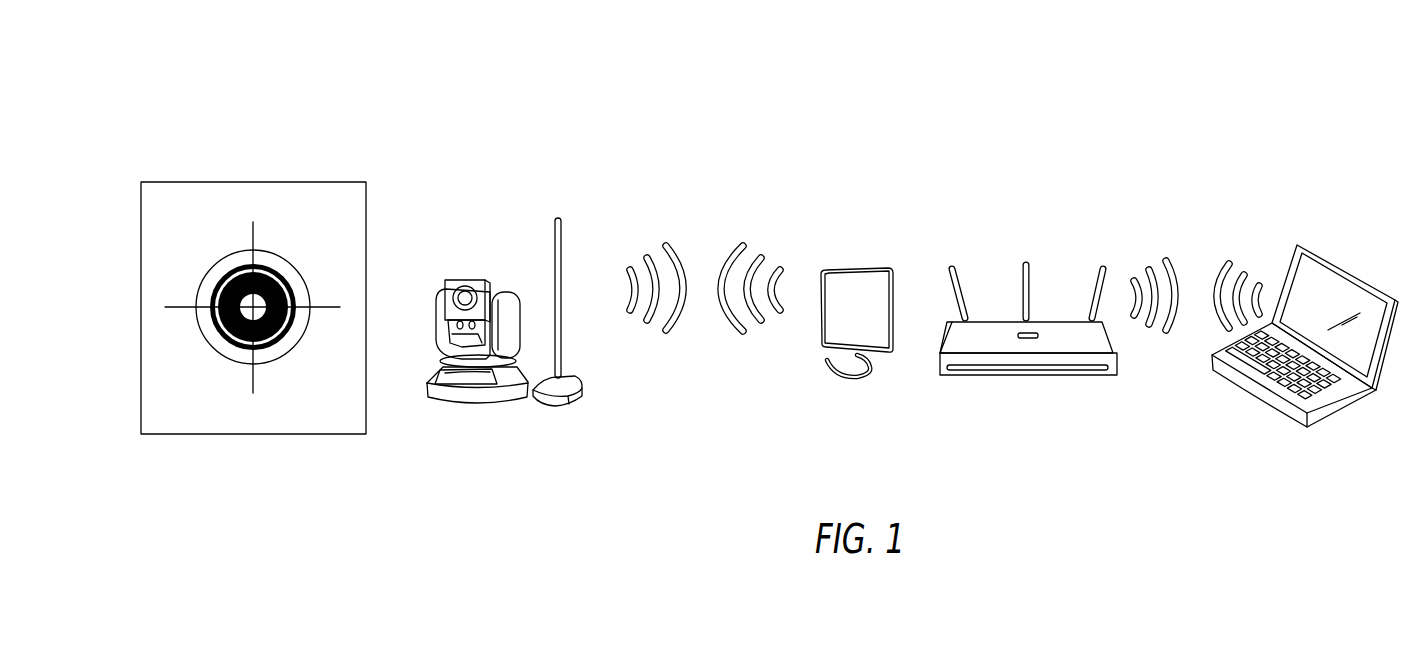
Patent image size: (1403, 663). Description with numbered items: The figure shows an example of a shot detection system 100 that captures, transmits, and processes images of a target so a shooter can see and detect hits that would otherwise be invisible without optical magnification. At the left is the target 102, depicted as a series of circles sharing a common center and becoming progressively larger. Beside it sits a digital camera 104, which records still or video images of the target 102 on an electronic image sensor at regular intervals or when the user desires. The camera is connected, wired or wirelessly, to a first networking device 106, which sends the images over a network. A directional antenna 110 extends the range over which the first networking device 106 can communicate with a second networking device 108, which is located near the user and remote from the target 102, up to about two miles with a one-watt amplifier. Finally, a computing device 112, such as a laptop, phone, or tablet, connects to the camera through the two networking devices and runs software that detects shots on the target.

The shot detection system 100 is at (237, 72).
The target 102 is at (338, 212).
The digital camera 104 is at (480, 280).
The first networking device 106 is at (560, 226).
The second networking device 108 is at (1007, 338).
The directional antenna 110 is at (866, 269).
The computing device 112 is at (1342, 265).